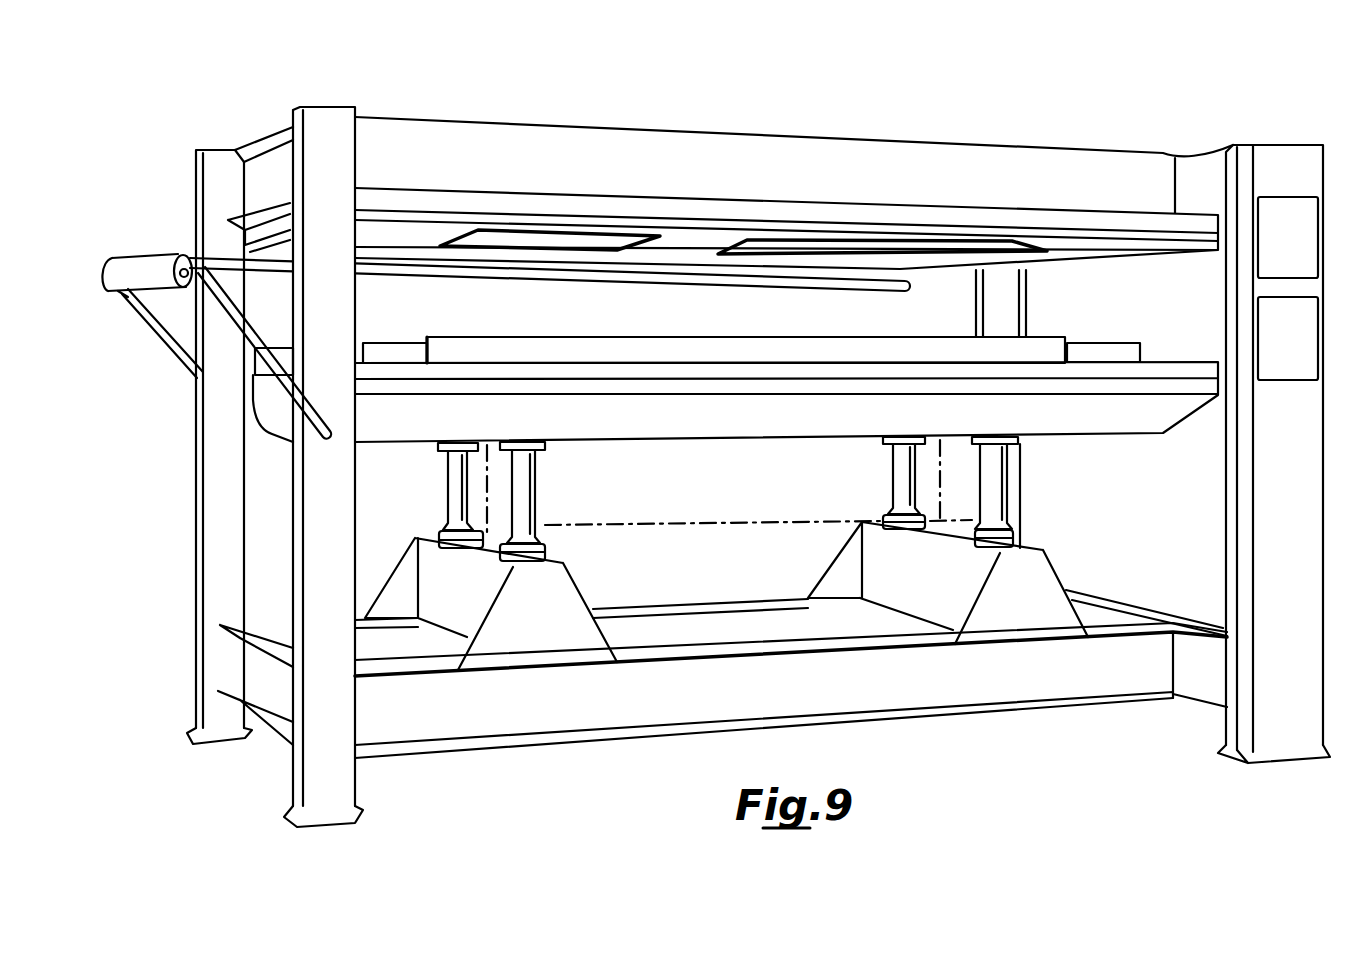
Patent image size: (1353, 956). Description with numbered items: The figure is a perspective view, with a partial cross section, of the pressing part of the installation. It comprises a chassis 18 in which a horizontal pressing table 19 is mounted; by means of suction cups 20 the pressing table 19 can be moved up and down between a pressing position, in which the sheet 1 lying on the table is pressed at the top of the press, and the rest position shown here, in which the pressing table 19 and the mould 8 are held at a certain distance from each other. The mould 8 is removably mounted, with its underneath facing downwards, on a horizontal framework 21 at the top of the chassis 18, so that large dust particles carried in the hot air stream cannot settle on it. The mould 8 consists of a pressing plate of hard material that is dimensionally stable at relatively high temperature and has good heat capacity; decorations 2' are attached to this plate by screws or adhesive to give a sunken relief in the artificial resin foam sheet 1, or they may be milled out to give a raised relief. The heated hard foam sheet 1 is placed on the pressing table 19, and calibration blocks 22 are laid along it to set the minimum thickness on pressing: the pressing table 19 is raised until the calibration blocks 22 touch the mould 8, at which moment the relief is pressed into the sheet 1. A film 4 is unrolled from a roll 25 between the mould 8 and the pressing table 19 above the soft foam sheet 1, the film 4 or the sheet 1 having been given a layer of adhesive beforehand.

The sheet 1 is at (685, 350).
The decorations 2' is at (743, 271).
The film 4 is at (220, 260).
The mould 8 is at (422, 242).
The chassis 18 is at (313, 474).
The pressing table 19 is at (1090, 420).
The suction cups 20 is at (532, 489).
The horizontal framework 21 is at (1052, 175).
The calibration blocks 22 is at (275, 348).
The roll 25 is at (132, 298).